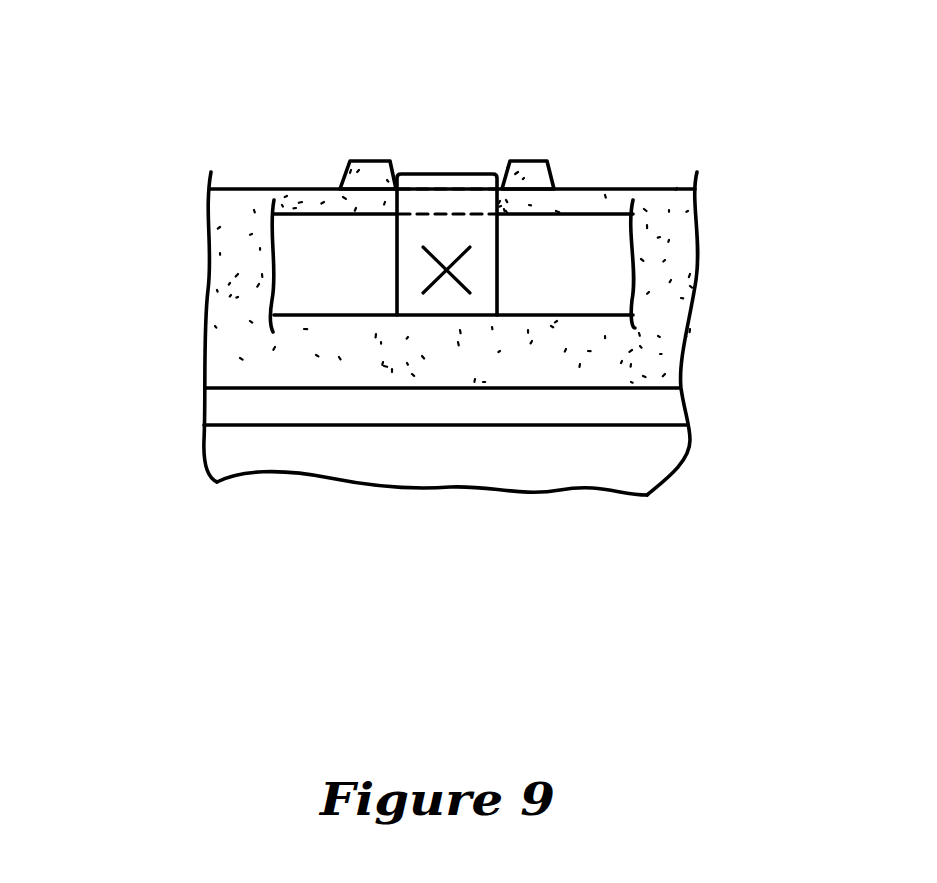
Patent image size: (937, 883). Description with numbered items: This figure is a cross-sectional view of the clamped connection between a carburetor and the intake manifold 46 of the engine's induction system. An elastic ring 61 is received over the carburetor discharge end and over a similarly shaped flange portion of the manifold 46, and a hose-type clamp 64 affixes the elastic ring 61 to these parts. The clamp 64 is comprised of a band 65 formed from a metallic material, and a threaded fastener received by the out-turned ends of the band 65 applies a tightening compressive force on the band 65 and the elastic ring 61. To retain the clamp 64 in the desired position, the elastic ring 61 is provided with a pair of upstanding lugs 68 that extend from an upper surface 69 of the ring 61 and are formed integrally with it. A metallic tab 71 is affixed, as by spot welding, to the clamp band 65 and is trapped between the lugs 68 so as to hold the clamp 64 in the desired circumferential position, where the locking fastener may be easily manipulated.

The intake manifold 46 is at (299, 452).
The elastic ring 61 is at (227, 353).
The hose-type clamp 64 is at (549, 320).
The band 65 is at (605, 278).
The upstanding lugs 68 is at (380, 163).
The upper surface 69 is at (630, 189).
The metallic tab 71 is at (443, 174).